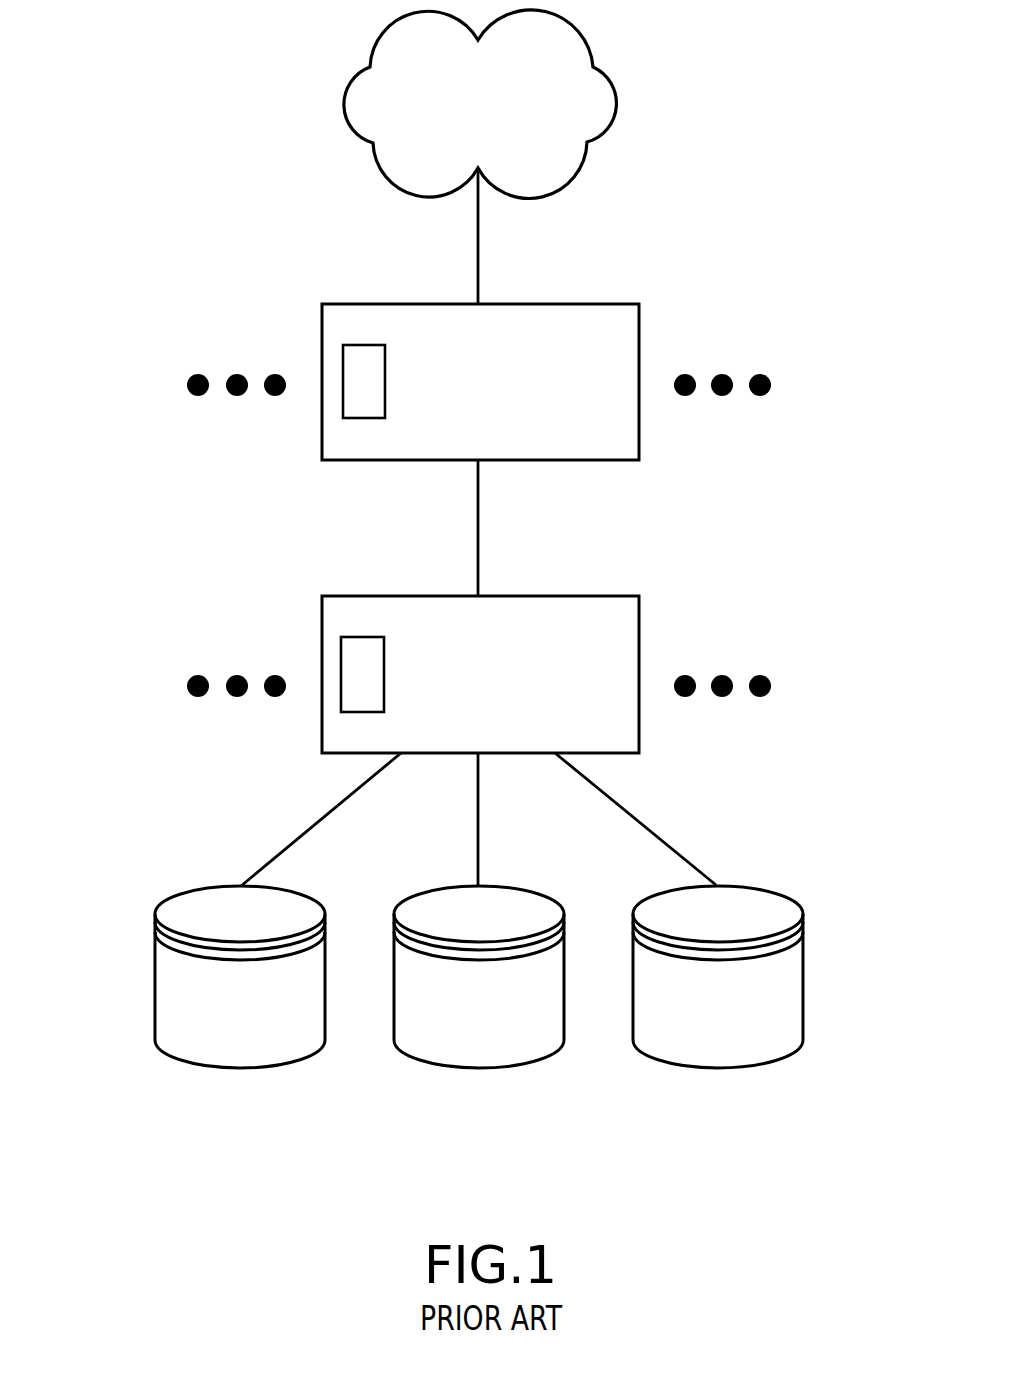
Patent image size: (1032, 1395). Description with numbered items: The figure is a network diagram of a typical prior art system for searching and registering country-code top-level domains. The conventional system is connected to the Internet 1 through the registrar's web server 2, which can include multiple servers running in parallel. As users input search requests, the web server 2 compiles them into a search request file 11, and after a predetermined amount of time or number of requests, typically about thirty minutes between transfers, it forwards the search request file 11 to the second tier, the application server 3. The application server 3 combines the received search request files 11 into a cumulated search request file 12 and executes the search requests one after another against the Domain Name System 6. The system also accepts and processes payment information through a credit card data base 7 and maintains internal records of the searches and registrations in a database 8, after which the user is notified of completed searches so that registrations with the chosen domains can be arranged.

The Internet 1 is at (636, 98).
The web server 2 is at (639, 334).
The application server 3 is at (639, 614).
The search request file 11 is at (362, 345).
The cumulated search request file 12 is at (362, 637).
The Domain Name System 6 is at (155, 1037).
The credit card data base 7 is at (477, 1070).
The database 8 is at (803, 1035).